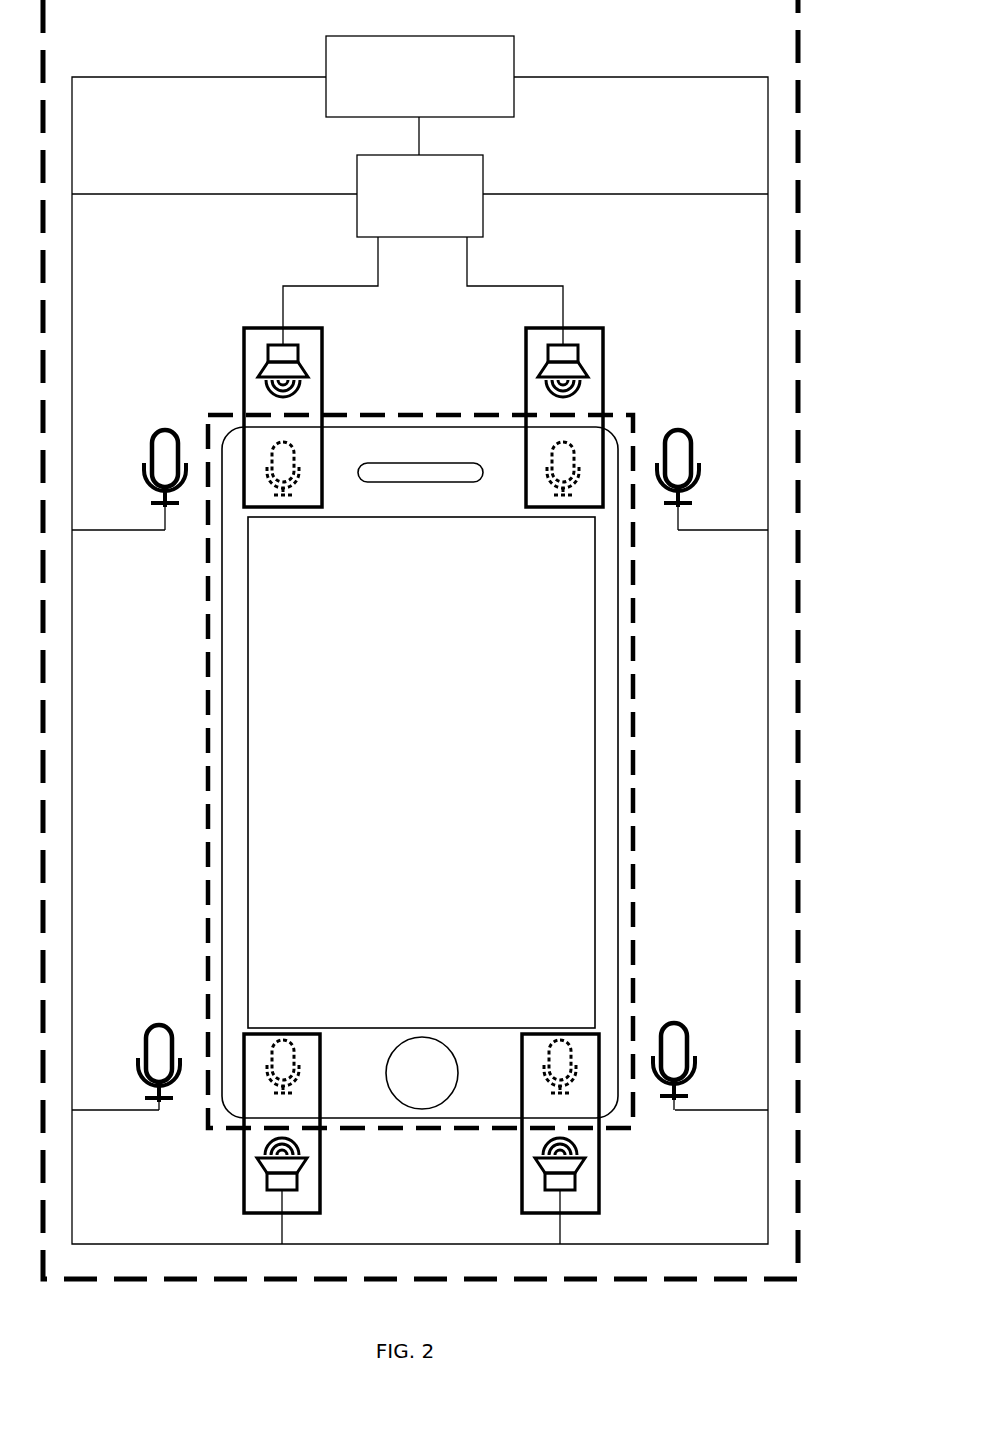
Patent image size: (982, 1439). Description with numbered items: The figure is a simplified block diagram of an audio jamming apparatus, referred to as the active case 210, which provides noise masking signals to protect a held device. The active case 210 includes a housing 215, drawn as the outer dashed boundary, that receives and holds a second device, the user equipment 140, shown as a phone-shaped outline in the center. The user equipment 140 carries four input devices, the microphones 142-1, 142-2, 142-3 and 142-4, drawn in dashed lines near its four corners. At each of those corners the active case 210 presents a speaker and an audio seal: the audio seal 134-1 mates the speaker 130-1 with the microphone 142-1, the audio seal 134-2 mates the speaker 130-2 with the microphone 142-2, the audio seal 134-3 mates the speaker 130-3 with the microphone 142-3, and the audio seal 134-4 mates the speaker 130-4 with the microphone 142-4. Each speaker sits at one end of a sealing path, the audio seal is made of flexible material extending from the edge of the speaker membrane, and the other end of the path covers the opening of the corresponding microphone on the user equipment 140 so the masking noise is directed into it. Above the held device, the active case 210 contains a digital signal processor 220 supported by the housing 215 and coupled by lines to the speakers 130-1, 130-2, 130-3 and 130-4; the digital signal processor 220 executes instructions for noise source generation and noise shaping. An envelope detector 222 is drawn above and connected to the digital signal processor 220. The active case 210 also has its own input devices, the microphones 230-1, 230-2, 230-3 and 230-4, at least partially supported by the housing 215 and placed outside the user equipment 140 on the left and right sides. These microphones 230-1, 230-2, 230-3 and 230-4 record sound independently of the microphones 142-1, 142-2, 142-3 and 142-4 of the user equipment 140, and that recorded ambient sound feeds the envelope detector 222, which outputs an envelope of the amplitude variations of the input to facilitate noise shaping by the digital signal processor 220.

The active case 210 is at (410, 622).
The housing 215 is at (768, 1280).
The envelope detector 222 is at (420, 95).
The digital signal processor 220 is at (423, 250).
The user equipment 140 is at (420, 771).
The audio seal 134-1 is at (244, 340).
The audio seal 134-2 is at (603, 340).
The audio seal 134-3 is at (244, 1188).
The audio seal 134-4 is at (599, 1188).
The speaker 130-1 is at (308, 371).
The speaker 130-2 is at (538, 371).
The speaker 130-3 is at (307, 1169).
The speaker 130-4 is at (535, 1169).
The microphone 230-1 is at (152, 452).
The microphone 230-2 is at (691, 452).
The microphone 230-3 is at (146, 1030).
The microphone 230-4 is at (688, 1035).
The microphone 142-1 is at (300, 483).
The microphone 142-2 is at (547, 483).
The microphone 142-3 is at (297, 1050).
The microphone 142-4 is at (545, 1050).